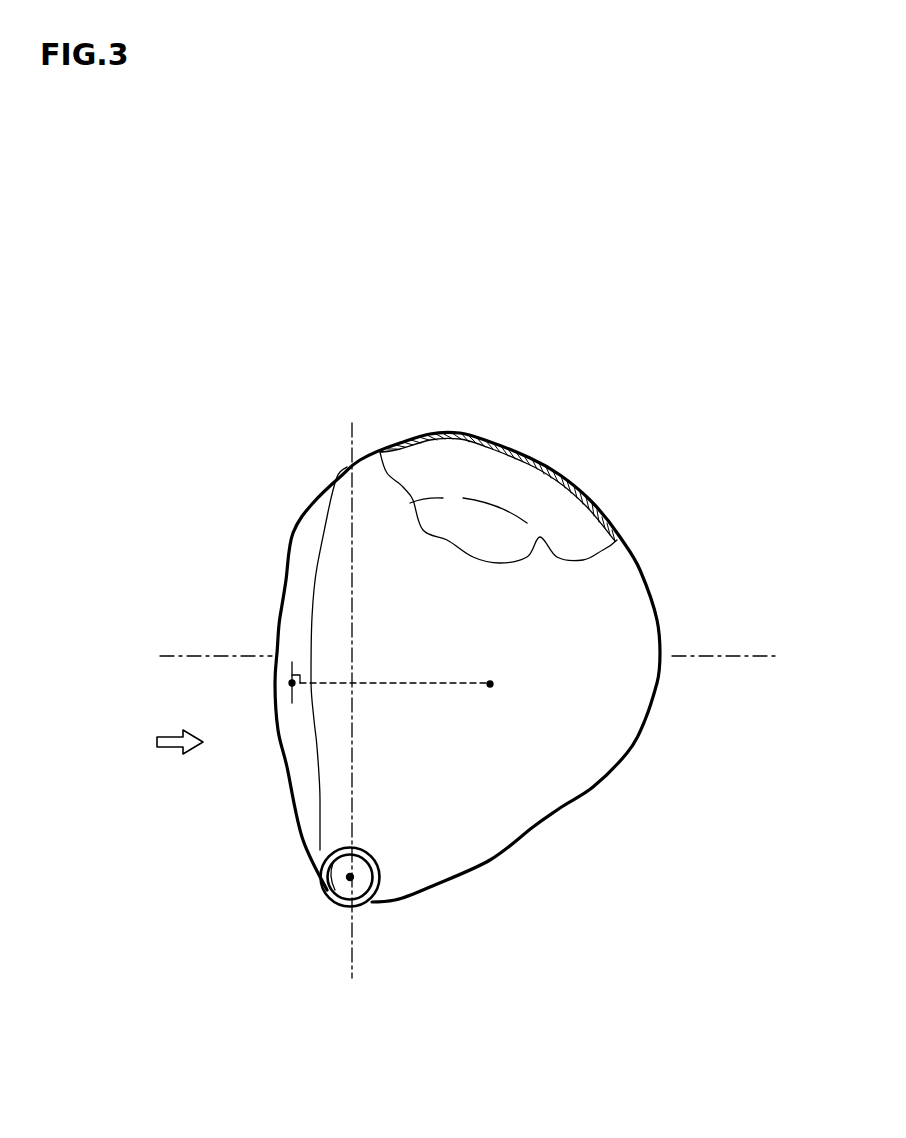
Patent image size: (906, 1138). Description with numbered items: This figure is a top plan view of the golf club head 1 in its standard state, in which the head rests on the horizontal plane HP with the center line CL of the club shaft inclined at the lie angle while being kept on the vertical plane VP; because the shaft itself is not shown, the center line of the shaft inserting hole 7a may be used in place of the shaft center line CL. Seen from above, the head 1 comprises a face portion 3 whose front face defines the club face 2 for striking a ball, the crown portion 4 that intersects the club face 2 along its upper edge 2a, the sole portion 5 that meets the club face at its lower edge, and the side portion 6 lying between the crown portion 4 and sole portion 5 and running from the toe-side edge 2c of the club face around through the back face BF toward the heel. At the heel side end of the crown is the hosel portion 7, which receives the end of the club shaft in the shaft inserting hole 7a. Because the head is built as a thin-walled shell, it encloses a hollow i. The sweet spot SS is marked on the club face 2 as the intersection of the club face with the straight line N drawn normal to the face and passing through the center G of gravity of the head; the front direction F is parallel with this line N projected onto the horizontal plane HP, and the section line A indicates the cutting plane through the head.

The golf club head 1 is at (563, 423).
The club face 2 is at (295, 758).
The upper edge of the club face 2a is at (318, 557).
The toe-side edge of the club face 2c is at (313, 500).
The face portion 3 is at (303, 610).
The crown portion 4 is at (567, 745).
The sole portion 5 is at (520, 543).
The side portion 6 is at (497, 467).
The hosel portion 7 is at (367, 927).
The shaft inserting hole 7a is at (333, 902).
The center line of the club shaft CL is at (347, 953).
The vertical plane VP is at (352, 445).
The horizontal plane HP is at (374, 377).
The section line A- A is at (466, 656).
The sweet spot SS is at (290, 683).
The center of gravity of the head G is at (399, 700).
The straight line normal to the club face N is at (440, 685).
The front direction F is at (170, 744).
The back face of the club head BF is at (663, 700).
The hollow i is at (496, 541).